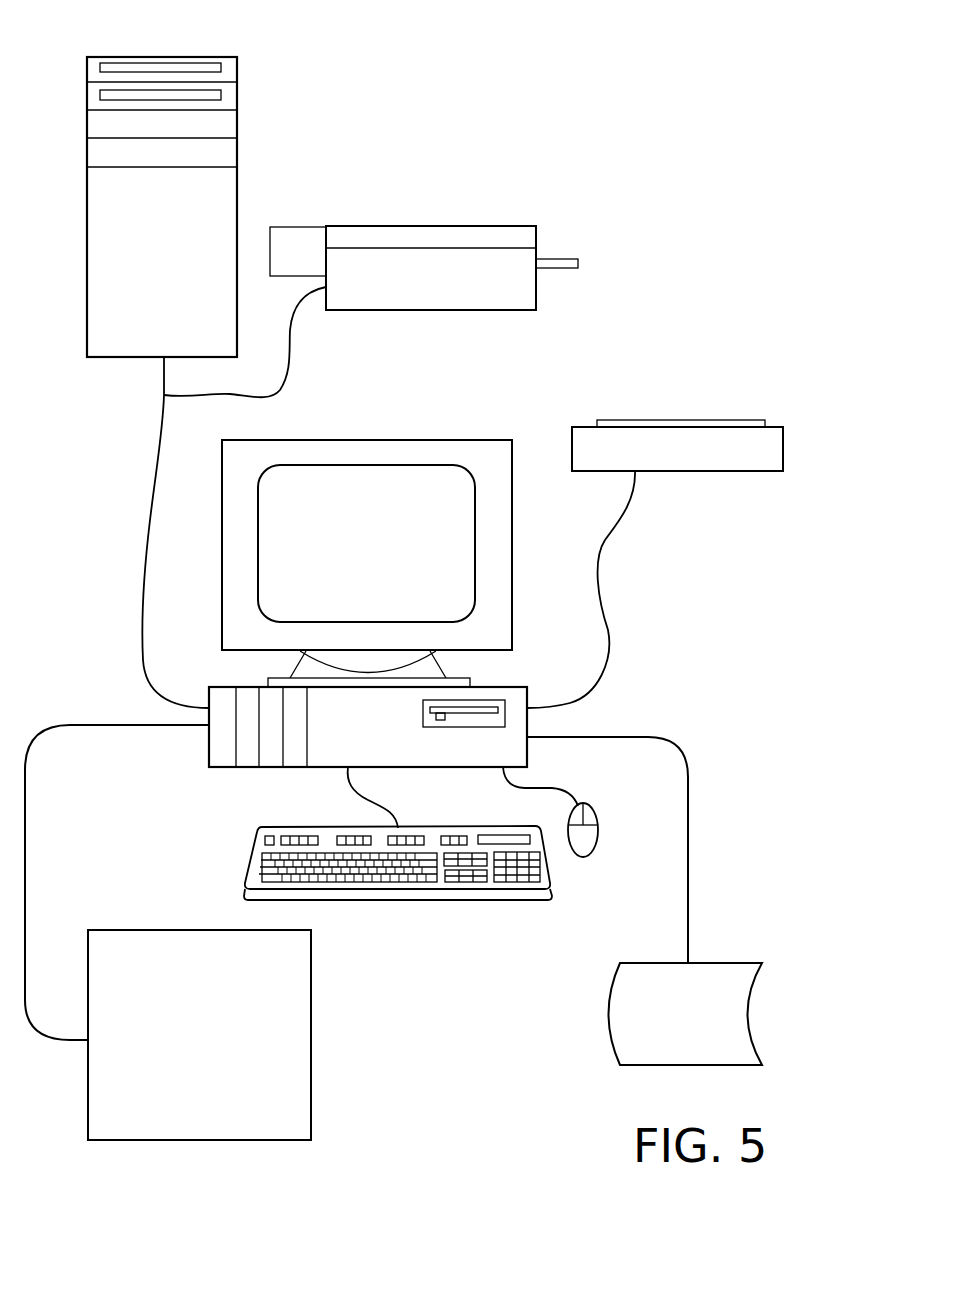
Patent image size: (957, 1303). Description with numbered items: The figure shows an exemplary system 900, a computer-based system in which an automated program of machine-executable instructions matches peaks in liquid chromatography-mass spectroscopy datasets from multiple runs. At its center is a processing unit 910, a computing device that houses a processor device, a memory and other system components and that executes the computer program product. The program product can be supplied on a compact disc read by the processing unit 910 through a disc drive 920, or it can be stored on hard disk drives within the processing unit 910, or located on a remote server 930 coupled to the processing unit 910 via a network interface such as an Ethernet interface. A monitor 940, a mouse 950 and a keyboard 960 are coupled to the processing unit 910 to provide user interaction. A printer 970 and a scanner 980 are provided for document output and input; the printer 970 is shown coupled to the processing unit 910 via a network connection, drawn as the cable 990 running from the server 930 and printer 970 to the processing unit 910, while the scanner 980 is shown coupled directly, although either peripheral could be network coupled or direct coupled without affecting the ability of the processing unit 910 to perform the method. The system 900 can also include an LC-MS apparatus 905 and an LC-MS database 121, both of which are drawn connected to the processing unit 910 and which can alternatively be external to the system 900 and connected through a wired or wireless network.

The exemplary system 900 is at (703, 106).
The LC-MS apparatus 905 is at (168, 932).
The processing unit 910 is at (209, 740).
The disc drive 920 is at (240, 62).
The server 930 is at (237, 184).
The monitor 940 is at (452, 440).
The mouse 950 is at (590, 856).
The keyboard 960 is at (251, 856).
The printer 970 is at (491, 226).
The scanner 980 is at (723, 420).
The network connection 990 is at (159, 437).
The LC-MS database 121 is at (644, 901).